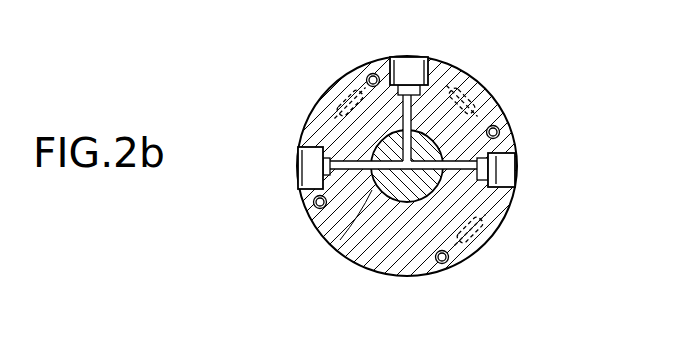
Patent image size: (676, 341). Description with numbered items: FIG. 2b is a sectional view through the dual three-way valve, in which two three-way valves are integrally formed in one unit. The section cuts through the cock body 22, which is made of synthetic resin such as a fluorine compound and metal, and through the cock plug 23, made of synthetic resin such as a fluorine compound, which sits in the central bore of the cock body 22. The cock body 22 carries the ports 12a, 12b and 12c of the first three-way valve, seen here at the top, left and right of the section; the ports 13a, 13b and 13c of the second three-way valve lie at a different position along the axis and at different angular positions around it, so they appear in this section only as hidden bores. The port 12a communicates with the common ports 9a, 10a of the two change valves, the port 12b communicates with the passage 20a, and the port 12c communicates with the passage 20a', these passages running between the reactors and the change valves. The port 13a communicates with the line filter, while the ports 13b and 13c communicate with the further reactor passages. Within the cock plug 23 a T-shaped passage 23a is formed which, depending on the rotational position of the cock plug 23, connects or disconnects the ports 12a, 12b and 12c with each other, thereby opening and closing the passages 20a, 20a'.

The common port 9a is at (421, 47).
The common port 10a is at (408, 56).
The port 12a is at (421, 72).
The port 12b is at (307, 175).
The port 12c is at (505, 180).
The port 13a is at (486, 98).
The port 13b is at (336, 93).
The port 13c is at (482, 243).
The passage 20a is at (271, 168).
The passage 20a' is at (543, 170).
The cock body 22 is at (513, 140).
The cock plug 23 is at (397, 200).
The T-shaped passage 23a is at (340, 240).